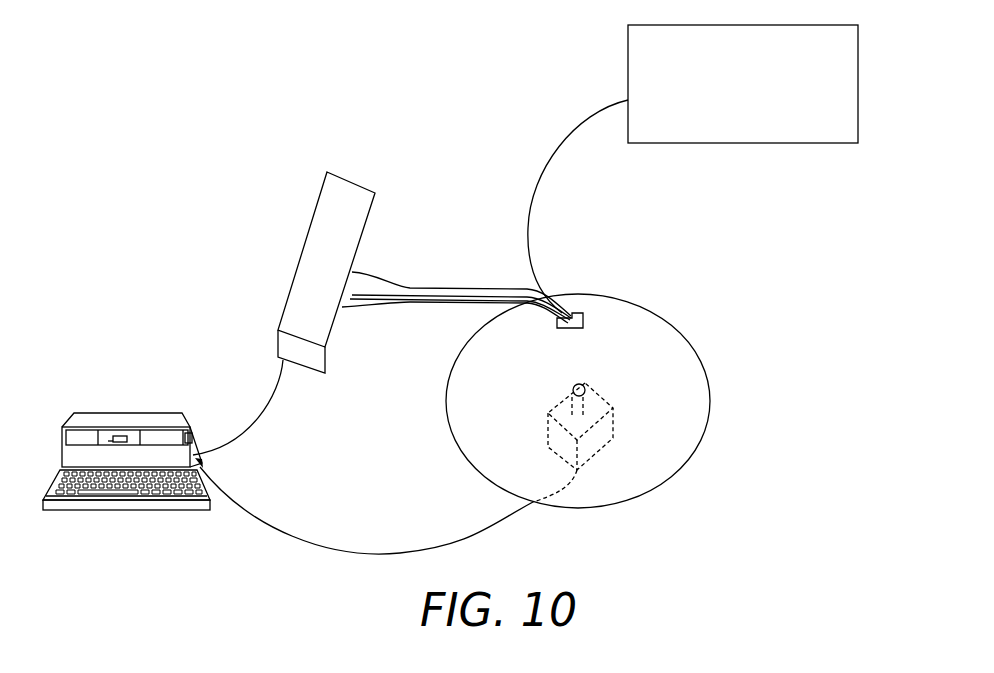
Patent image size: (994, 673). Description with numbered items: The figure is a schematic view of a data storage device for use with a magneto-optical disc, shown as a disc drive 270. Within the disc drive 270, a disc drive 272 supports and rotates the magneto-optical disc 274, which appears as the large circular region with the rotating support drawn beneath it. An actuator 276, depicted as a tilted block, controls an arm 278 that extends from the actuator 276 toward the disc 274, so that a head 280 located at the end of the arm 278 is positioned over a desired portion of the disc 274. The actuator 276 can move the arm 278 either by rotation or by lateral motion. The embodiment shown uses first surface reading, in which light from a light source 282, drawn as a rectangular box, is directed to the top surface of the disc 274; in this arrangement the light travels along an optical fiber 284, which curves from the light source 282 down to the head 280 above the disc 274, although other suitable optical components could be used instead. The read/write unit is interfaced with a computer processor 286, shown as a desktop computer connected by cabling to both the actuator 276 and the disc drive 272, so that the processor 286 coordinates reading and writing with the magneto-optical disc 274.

The disc drive 270 is at (752, 300).
The disc drive 272 is at (600, 438).
The magneto-optical disc 274 is at (690, 432).
The actuator 276 is at (343, 190).
The arm 278 is at (423, 287).
The head 280 is at (582, 312).
The light source 282 is at (688, 143).
The optical fiber 284 is at (572, 138).
The computer processor 286 is at (185, 418).